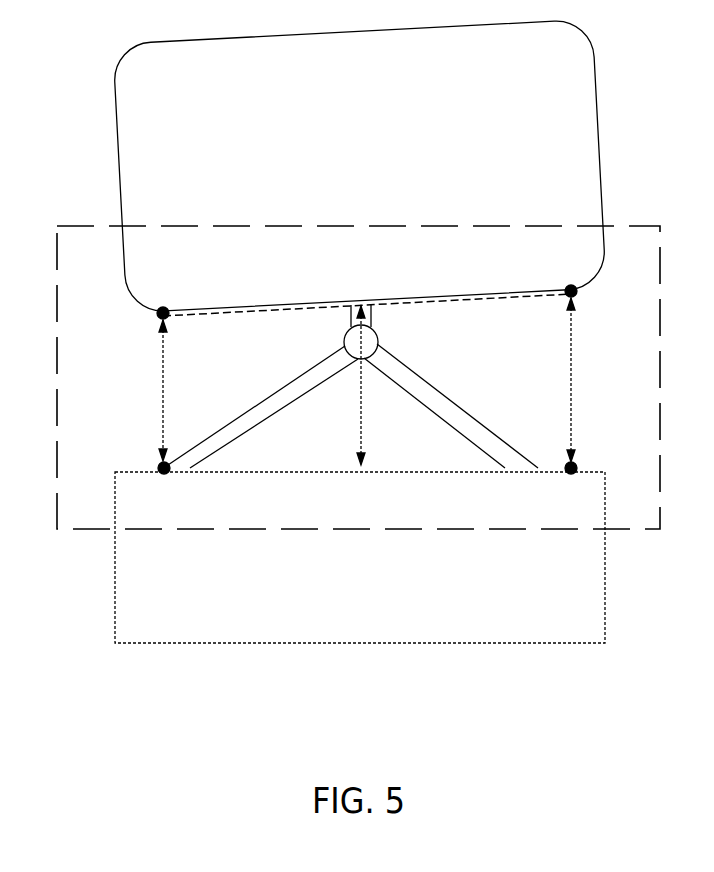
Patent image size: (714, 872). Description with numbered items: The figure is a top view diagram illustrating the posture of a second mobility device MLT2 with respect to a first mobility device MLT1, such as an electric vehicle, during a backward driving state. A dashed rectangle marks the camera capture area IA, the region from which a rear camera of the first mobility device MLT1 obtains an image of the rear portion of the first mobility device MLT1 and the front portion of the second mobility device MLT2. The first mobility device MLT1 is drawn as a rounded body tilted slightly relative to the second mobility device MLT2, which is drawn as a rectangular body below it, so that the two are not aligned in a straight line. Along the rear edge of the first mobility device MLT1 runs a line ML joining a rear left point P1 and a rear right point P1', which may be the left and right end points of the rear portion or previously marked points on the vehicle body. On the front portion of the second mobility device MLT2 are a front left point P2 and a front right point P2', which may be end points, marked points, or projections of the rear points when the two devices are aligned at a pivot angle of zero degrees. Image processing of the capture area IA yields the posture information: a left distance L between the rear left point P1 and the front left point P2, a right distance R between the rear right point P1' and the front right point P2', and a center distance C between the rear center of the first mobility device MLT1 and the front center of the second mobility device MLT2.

The camera capture area IA is at (647, 226).
The first mobility device MLT1 is at (359, 166).
The second mobility device MLT2 is at (360, 557).
The margin line ML is at (482, 298).
The rear left point P1 is at (163, 298).
The rear right point P1' is at (573, 275).
The front left point P2 is at (165, 484).
The front right point P2' is at (576, 484).
The left distance L is at (169, 390).
The center distance C is at (367, 385).
The right distance R is at (578, 380).